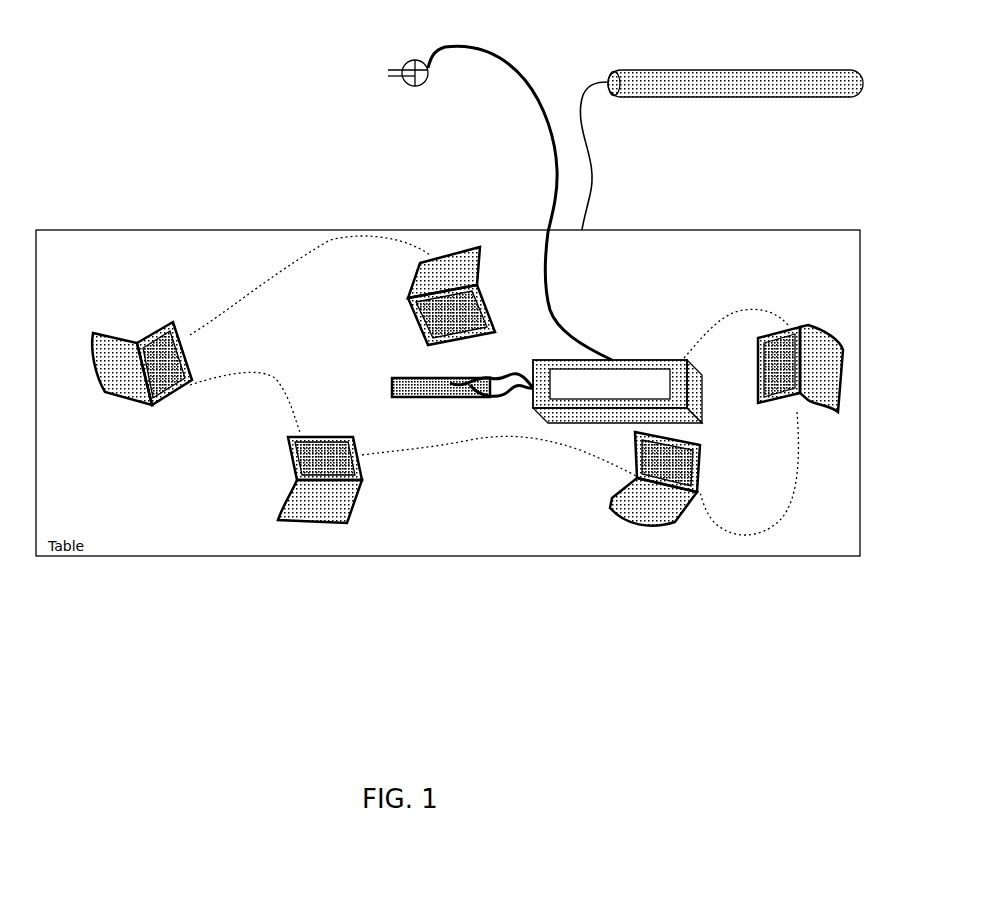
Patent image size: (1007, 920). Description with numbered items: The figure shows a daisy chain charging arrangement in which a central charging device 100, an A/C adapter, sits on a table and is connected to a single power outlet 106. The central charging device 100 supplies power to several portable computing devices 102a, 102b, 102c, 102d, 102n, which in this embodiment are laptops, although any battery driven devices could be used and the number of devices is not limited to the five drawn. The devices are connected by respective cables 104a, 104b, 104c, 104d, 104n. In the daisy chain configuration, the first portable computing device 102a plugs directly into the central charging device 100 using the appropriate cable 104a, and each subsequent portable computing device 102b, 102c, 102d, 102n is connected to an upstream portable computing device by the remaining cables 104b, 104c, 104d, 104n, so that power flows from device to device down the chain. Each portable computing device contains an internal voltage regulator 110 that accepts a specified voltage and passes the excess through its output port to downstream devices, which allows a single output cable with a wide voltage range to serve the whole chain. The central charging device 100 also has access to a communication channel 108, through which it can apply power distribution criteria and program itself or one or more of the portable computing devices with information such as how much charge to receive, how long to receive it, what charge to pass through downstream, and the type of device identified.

The central charging device 100 is at (634, 400).
The first portable computing device 102a is at (828, 330).
The portable computing device 102b is at (609, 497).
The portable computing device 102c is at (360, 508).
The portable computing device 102d is at (173, 400).
The portable computing device 102n is at (420, 331).
The cable 104a is at (736, 318).
The cable 104b is at (764, 501).
The cable 104c is at (501, 464).
The cable 104d is at (245, 402).
The cable 104n is at (310, 285).
The power outlet 106 is at (462, 188).
The communication channel 108 is at (721, 123).
The internal voltage regulator 110 is at (471, 391).